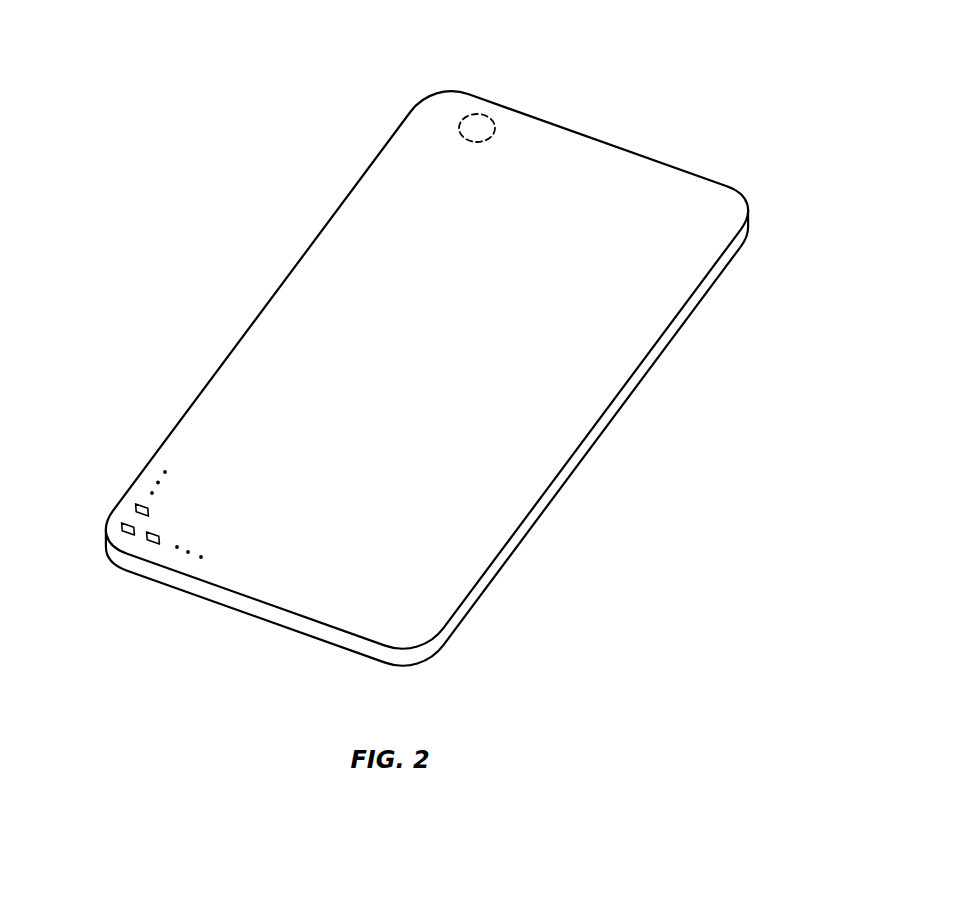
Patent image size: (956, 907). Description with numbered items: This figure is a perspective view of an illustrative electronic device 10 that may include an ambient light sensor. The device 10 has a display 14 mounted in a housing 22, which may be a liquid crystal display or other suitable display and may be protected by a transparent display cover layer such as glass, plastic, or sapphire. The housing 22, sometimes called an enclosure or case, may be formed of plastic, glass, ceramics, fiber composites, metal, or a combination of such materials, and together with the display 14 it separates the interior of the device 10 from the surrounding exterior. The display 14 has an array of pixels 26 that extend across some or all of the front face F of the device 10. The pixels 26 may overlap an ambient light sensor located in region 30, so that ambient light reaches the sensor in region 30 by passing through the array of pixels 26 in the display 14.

The electronic device 10 is at (434, 351).
The display 14 is at (296, 336).
The housing 22 is at (752, 215).
The pixels 26 is at (134, 509).
The region 30 is at (477, 117).
The front face F is at (529, 447).